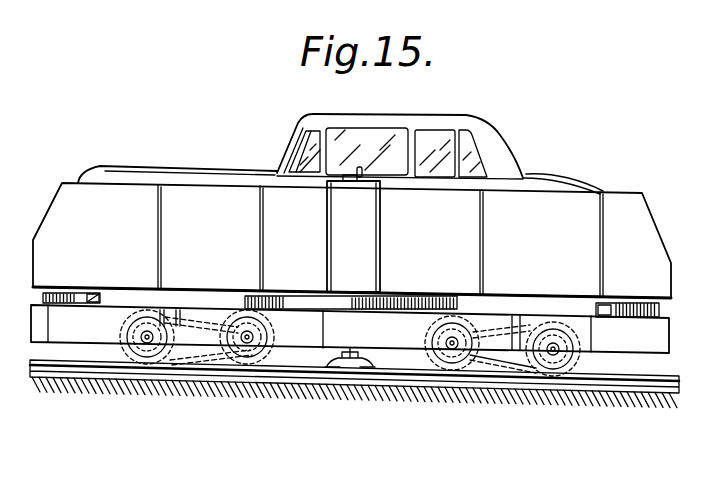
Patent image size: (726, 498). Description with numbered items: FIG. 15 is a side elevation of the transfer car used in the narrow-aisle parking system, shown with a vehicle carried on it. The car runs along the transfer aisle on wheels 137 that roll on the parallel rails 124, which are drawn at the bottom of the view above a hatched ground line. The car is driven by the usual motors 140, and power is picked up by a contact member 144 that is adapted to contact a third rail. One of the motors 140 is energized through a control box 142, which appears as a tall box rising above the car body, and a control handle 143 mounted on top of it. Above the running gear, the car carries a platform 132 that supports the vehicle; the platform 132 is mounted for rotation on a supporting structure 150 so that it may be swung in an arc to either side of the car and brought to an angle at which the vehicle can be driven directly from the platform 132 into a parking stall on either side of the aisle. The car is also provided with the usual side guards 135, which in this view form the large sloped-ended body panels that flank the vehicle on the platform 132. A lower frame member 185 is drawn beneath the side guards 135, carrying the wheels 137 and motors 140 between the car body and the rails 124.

The parallel rails 124 is at (660, 380).
The platform 132 is at (662, 303).
The side guards 135 is at (608, 217).
The wheels 137 is at (127, 350).
The motors 140 is at (325, 354).
The control box 142 is at (360, 247).
The control handle 143 is at (368, 176).
The contact member 144 is at (378, 346).
The supporting structure 150 is at (432, 288).
The truck frame 185 is at (672, 335).